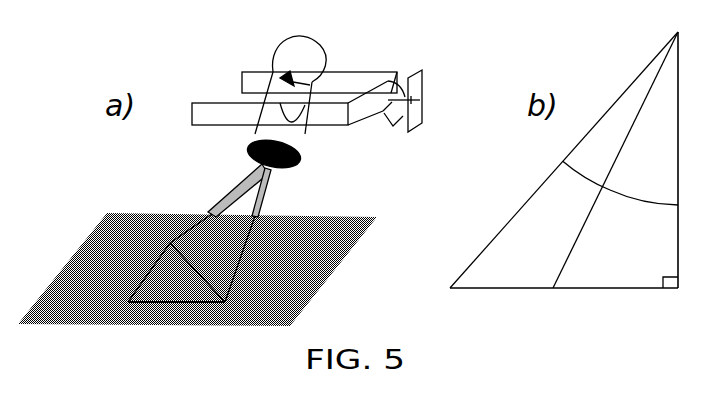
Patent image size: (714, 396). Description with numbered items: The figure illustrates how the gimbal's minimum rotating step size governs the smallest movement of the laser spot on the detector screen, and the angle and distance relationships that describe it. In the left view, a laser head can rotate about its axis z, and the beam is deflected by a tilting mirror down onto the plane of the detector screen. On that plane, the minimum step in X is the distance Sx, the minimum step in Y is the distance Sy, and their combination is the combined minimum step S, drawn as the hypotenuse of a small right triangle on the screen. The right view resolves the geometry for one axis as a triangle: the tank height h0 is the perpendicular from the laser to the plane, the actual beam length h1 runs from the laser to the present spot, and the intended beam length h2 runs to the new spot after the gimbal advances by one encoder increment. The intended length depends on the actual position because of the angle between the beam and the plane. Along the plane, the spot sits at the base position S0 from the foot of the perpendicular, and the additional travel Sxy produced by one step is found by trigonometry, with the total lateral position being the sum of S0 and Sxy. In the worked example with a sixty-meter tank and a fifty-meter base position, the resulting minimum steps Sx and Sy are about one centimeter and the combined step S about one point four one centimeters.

In FIG. 5a, the rotation axis z is at (299, 61).
In FIG. 5a, the minimum step in X Sx is at (140, 272).
In FIG. 5a, the minimum step in Y Sy is at (176, 320).
In FIG. 5a, the combined minimum step S is at (197, 272).
In FIG. 5b, the tank height h0 is at (657, 160).
In FIG. 5b, the actual beam length h1 is at (602, 160).
In FIG. 5b, the intended beam length h2 is at (554, 160).
In FIG. 5b, the distance Sxy is at (501, 315).
In FIG. 5b, the laser beam position S0 is at (615, 316).